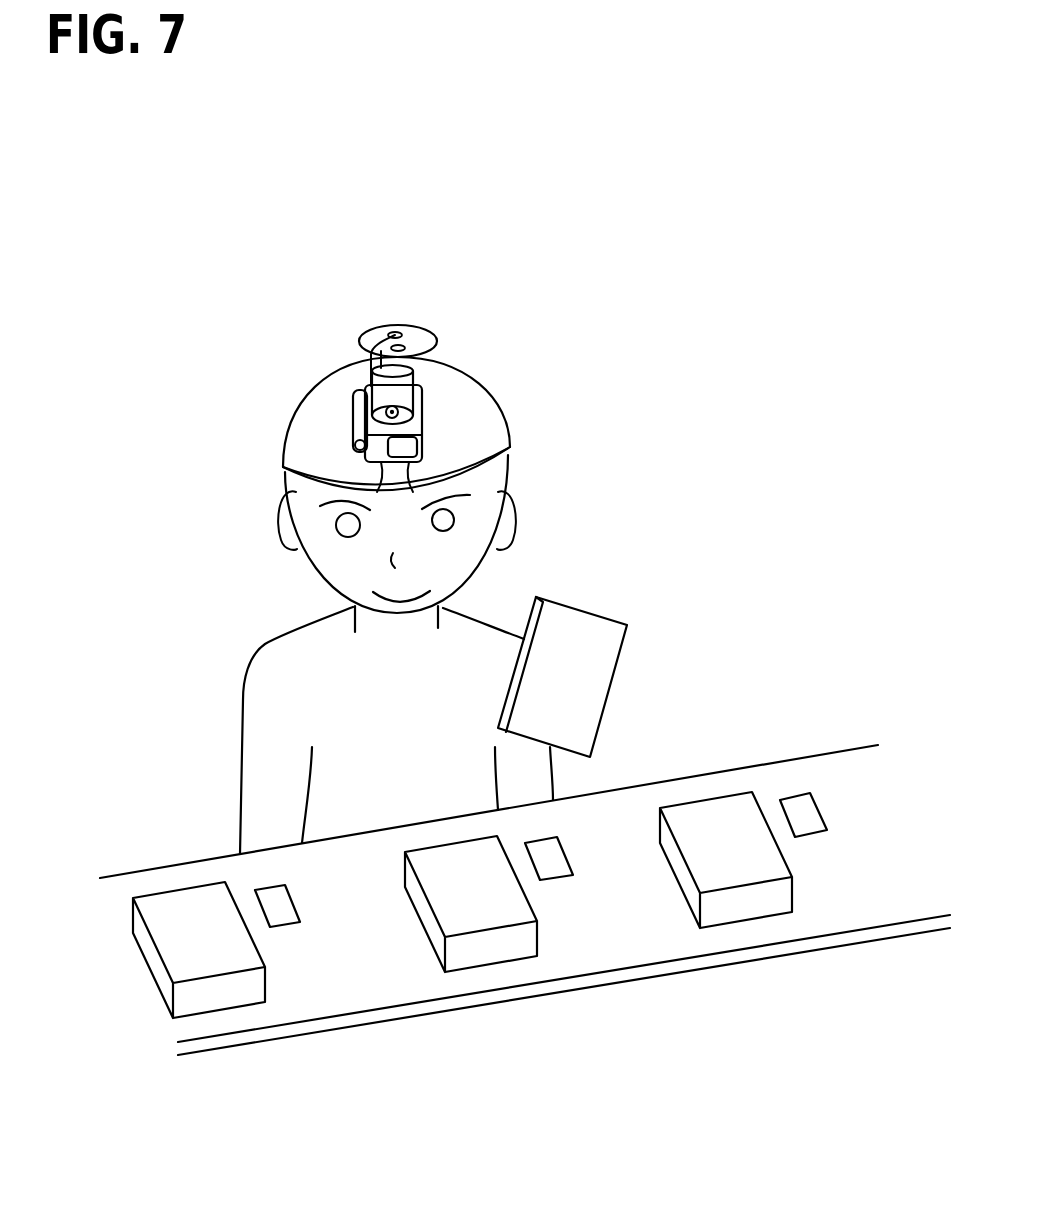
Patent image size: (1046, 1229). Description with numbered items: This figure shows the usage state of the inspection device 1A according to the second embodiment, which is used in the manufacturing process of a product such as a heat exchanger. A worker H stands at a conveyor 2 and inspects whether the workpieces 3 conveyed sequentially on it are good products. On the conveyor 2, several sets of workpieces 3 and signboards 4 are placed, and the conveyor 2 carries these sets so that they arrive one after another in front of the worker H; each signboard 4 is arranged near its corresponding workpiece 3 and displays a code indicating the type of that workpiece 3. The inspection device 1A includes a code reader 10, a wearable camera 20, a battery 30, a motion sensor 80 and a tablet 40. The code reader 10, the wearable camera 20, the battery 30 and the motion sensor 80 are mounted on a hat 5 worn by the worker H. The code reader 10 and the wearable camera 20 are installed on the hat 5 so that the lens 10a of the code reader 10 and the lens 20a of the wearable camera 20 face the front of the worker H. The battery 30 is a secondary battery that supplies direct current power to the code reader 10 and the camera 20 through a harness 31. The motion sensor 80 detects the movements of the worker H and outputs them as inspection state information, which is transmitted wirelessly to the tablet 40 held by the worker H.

The inspection device 1A is at (123, 550).
The worker H is at (270, 537).
The conveyor 2 is at (618, 937).
The workpiece 3 is at (462, 952).
The signboard 4 is at (543, 886).
The hat 5 is at (478, 457).
The code reader 10 is at (427, 433).
The lens of the code reader 10a is at (407, 448).
The wearable camera 20 is at (393, 385).
The lens of the wearable camera 20a is at (392, 412).
The battery 30 is at (417, 332).
The harness 31 is at (405, 359).
The tablet 40 is at (607, 665).
The motion sensor 80 is at (360, 443).